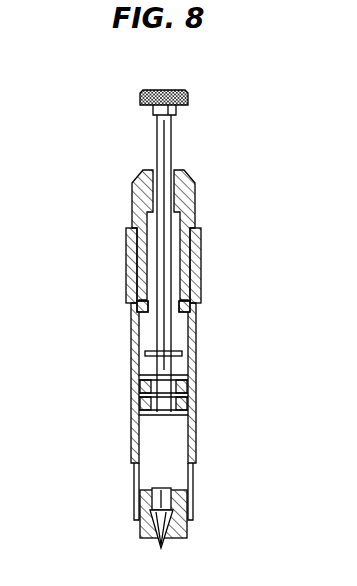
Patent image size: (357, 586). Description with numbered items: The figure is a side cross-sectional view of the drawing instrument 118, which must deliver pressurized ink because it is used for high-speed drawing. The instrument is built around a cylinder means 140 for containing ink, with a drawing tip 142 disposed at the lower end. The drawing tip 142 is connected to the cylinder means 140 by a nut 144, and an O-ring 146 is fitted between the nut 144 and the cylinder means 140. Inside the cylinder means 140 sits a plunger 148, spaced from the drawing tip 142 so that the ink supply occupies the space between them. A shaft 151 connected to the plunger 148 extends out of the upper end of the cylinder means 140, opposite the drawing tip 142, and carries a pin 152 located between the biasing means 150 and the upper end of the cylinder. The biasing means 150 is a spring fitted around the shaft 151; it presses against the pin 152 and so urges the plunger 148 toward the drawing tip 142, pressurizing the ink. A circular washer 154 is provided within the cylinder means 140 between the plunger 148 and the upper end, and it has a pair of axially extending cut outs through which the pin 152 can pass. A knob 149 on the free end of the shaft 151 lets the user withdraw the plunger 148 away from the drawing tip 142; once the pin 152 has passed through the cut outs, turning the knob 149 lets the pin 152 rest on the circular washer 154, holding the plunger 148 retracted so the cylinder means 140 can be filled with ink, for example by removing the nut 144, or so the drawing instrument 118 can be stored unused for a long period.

The drawing instrument 118 is at (100, 142).
The cylinder means 140 is at (158, 430).
The drawing tip 142 is at (160, 534).
The nut 144 is at (140, 515).
The O-ring 146 is at (190, 518).
The plunger 148 is at (186, 400).
The knob 149 is at (188, 97).
The biasing means 150 is at (165, 262).
The shaft 151 is at (163, 148).
The pin 152 is at (178, 355).
The circular washer 154 is at (140, 305).